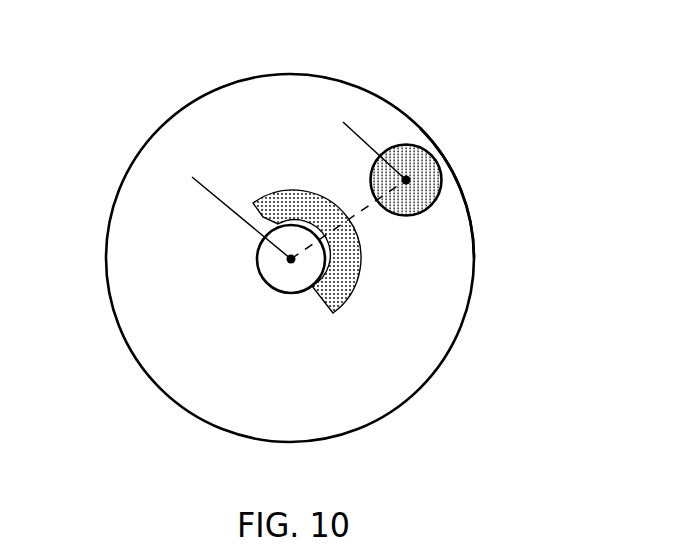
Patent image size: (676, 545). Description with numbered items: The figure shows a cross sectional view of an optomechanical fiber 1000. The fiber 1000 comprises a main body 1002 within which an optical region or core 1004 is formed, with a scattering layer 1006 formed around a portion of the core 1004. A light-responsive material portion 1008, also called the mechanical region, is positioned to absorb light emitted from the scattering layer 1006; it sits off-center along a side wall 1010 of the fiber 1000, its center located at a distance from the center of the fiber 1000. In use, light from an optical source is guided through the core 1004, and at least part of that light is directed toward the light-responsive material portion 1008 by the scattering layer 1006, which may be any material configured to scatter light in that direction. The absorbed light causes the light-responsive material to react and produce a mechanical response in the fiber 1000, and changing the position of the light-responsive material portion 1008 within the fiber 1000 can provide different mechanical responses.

The fiber 1000 is at (158, 96).
The main body 1002 is at (167, 213).
The core 1004 is at (283, 272).
The scattering layer 1006 is at (358, 297).
The light-responsive material portion 1008 is at (425, 174).
The side wall 1010 is at (462, 177).